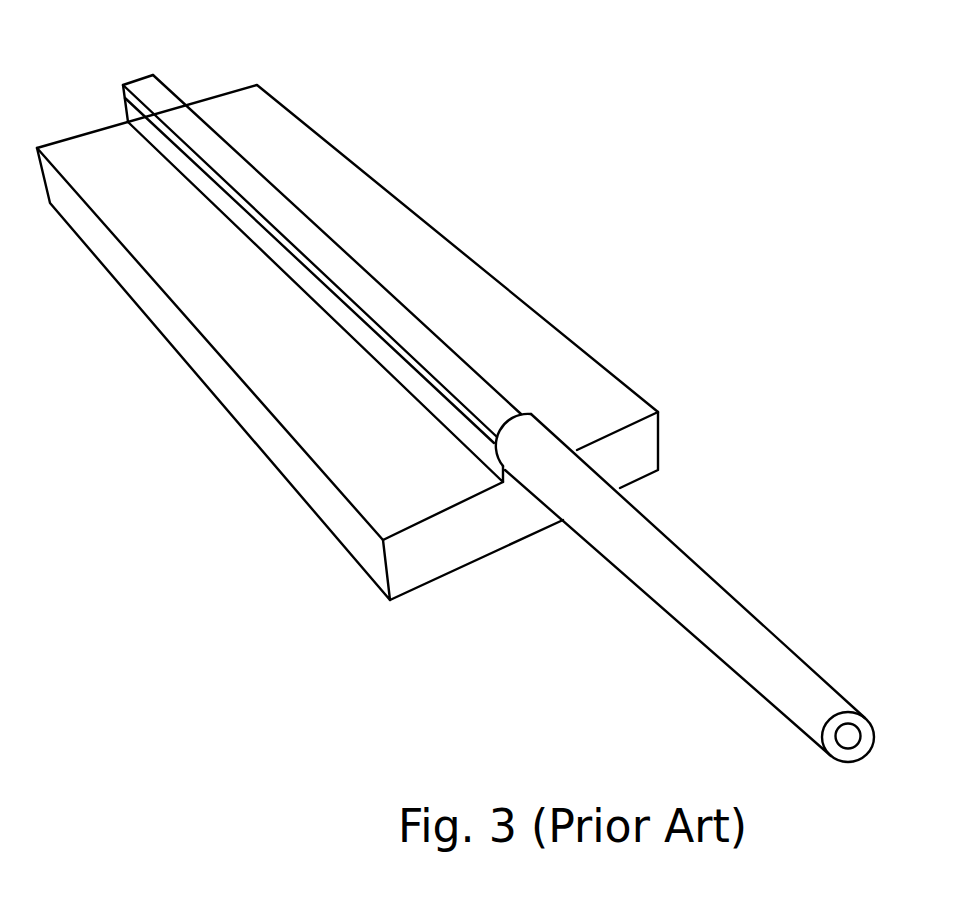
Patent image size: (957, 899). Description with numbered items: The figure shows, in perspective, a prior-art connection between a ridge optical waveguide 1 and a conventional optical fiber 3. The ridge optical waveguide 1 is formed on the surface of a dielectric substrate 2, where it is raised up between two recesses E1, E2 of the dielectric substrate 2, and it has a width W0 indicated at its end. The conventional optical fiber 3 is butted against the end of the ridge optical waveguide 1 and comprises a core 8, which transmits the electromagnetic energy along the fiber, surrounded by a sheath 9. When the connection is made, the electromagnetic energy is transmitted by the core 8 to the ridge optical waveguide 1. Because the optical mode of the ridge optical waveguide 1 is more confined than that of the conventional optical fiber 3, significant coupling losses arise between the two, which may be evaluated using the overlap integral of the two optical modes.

The ridge optical waveguide 1 is at (347, 270).
The dielectric substrate 2 is at (242, 428).
The conventional optical fiber 3 is at (680, 540).
The core 8 is at (849, 738).
The sheath 9 is at (845, 758).
The recess E1 is at (110, 157).
The recess E2 is at (283, 145).
The width W0 is at (142, 64).